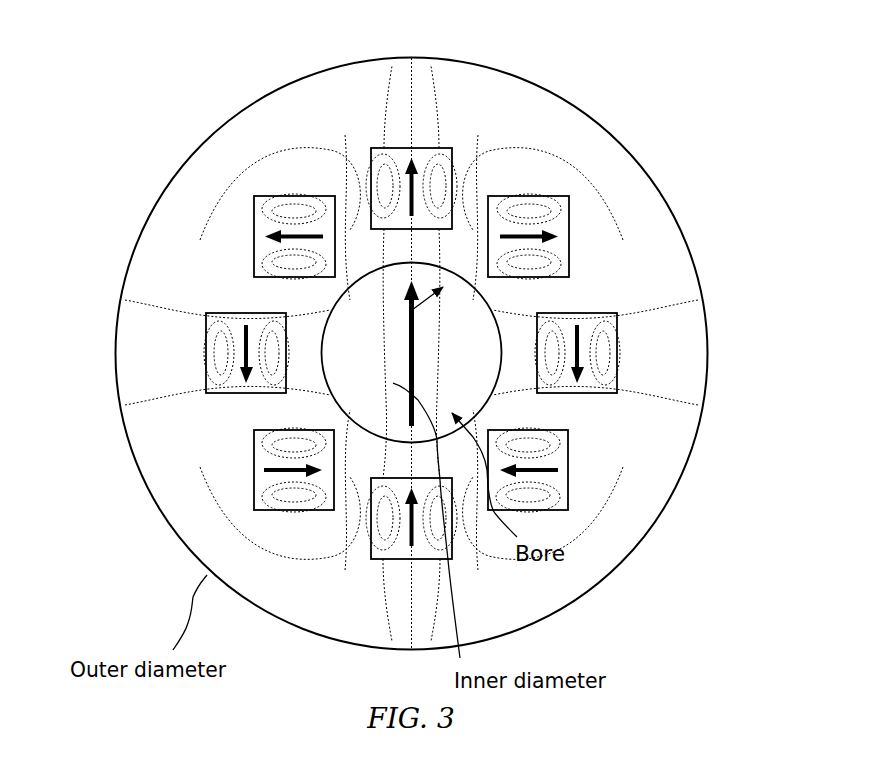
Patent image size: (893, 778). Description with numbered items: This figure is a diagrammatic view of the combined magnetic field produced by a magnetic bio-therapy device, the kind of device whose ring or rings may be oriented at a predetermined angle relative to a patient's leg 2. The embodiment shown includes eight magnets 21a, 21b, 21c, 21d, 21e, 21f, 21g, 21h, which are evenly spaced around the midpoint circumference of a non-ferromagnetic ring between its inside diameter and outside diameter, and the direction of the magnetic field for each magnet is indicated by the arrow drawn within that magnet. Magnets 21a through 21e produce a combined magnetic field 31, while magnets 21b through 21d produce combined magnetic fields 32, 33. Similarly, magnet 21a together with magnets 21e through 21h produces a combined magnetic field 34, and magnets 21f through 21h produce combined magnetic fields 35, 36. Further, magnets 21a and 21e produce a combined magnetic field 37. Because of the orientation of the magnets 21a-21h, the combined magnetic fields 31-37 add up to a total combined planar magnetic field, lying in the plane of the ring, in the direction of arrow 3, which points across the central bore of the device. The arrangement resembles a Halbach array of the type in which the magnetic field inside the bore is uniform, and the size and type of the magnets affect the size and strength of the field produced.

The leg 2 is at (412, 326).
The arrow 3 is at (345, 450).
The magnet 21a is at (398, 148).
The magnet 21b is at (277, 196).
The magnet 21c is at (206, 360).
The magnet 21d is at (254, 479).
The magnet 21e is at (397, 560).
The magnet 21f is at (568, 480).
The magnet 21g is at (617, 360).
The magnet 21h is at (545, 197).
The combined magnetic field 31 is at (386, 263).
The combined magnetic field 32 is at (357, 310).
The combined magnetic field 33 is at (358, 347).
The combined magnetic field 34 is at (438, 358).
The combined magnetic field 35 is at (465, 309).
The combined magnetic field 36 is at (490, 347).
The combined magnetic field 37 is at (410, 427).